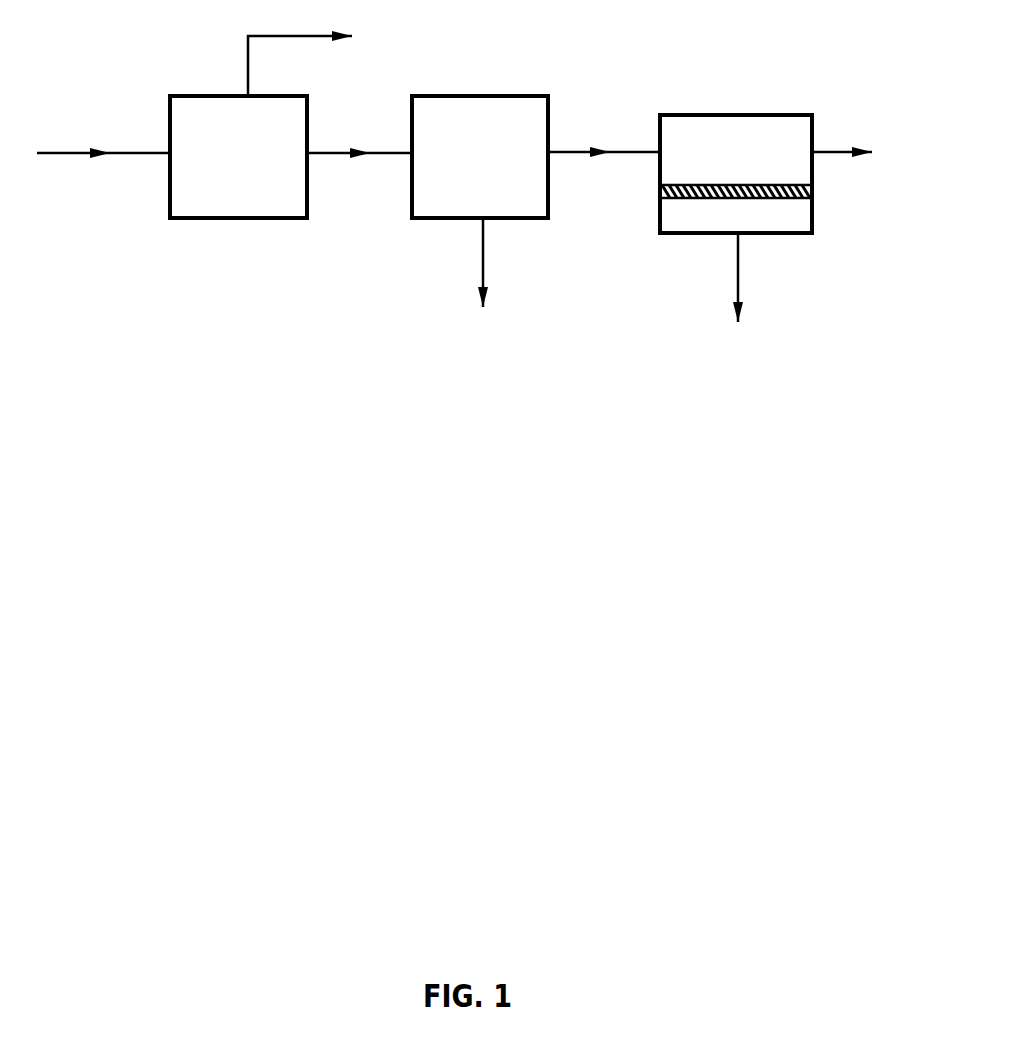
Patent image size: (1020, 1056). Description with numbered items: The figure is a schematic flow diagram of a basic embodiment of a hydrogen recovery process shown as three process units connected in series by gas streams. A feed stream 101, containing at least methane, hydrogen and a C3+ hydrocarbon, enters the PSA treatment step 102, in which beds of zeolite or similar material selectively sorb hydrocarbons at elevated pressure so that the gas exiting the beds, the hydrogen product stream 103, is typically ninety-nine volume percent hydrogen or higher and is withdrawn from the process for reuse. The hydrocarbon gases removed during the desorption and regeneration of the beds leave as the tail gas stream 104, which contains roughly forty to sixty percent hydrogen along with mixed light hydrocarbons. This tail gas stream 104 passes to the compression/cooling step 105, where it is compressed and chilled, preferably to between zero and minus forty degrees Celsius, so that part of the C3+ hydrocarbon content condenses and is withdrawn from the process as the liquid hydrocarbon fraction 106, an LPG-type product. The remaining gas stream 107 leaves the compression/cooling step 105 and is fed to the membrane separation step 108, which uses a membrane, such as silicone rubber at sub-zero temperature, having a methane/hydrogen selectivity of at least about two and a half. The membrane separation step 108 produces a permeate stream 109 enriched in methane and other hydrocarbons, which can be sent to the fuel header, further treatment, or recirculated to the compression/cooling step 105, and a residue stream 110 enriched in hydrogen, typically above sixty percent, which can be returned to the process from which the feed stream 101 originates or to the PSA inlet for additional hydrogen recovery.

The feed stream 101 is at (103, 173).
The PSA treatment step 102 is at (228, 219).
The hydrogen product stream 103 is at (327, 60).
The tail gas stream 104 is at (359, 172).
The compression/cooling step 105 is at (425, 219).
The liquid hydrocarbon fraction 106 is at (488, 284).
The gas stream 107 is at (604, 170).
The membrane separation step 108 is at (692, 234).
The permeate stream 109 is at (743, 298).
The residue stream 110 is at (871, 153).